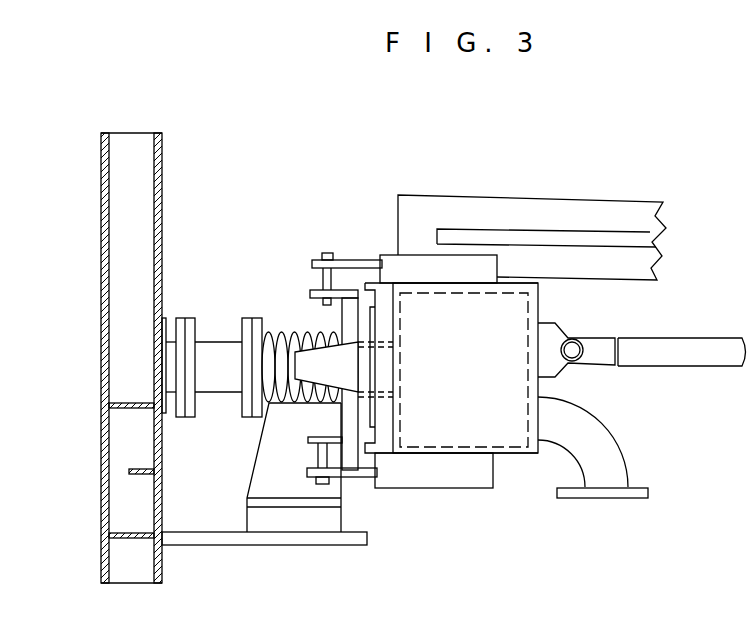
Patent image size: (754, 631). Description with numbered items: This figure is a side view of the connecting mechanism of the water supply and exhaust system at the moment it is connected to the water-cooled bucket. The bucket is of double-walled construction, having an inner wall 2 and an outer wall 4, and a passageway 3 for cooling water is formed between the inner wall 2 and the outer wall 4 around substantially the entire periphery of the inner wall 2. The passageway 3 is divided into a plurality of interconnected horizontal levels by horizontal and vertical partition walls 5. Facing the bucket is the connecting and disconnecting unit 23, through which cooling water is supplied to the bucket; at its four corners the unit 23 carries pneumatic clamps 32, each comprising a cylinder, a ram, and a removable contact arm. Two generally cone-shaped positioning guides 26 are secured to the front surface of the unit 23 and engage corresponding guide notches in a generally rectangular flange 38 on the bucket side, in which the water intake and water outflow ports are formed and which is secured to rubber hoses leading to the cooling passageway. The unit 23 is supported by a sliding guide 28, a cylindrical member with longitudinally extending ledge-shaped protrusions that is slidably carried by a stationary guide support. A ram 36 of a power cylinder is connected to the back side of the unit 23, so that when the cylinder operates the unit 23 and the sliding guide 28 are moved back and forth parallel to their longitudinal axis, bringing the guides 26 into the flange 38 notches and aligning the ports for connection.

The inner wall 2 is at (100, 578).
The passageway 3 is at (141, 456).
The outer wall 4 is at (162, 465).
The partition walls 5 is at (132, 535).
The connecting and disconnecting unit 23 is at (478, 377).
The positioning guides 26 is at (344, 369).
The sliding guide 28 is at (512, 195).
The pneumatic clamps 32 is at (313, 262).
The ram 36 is at (652, 340).
The flange 38 is at (341, 428).